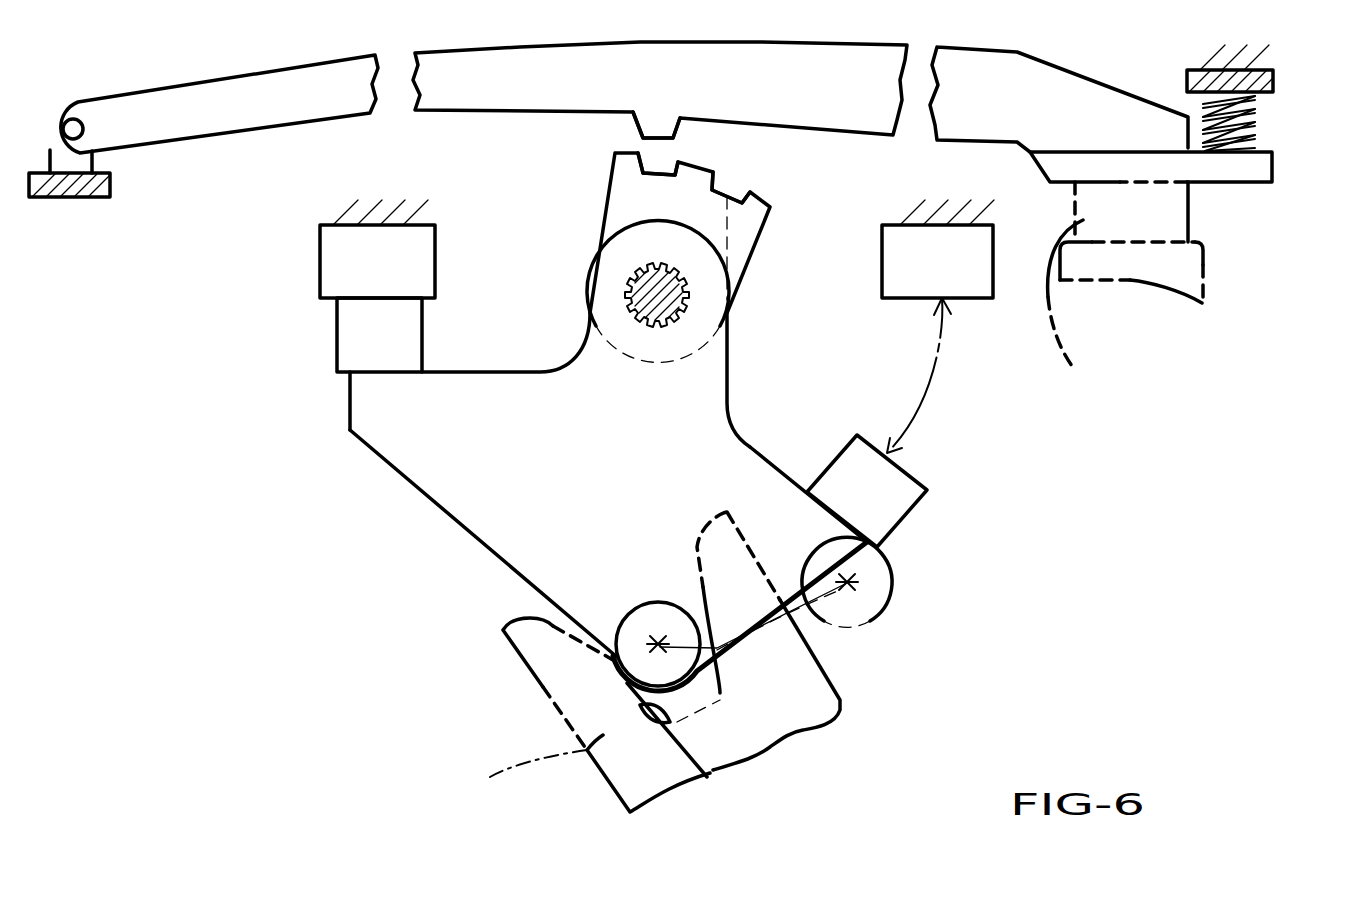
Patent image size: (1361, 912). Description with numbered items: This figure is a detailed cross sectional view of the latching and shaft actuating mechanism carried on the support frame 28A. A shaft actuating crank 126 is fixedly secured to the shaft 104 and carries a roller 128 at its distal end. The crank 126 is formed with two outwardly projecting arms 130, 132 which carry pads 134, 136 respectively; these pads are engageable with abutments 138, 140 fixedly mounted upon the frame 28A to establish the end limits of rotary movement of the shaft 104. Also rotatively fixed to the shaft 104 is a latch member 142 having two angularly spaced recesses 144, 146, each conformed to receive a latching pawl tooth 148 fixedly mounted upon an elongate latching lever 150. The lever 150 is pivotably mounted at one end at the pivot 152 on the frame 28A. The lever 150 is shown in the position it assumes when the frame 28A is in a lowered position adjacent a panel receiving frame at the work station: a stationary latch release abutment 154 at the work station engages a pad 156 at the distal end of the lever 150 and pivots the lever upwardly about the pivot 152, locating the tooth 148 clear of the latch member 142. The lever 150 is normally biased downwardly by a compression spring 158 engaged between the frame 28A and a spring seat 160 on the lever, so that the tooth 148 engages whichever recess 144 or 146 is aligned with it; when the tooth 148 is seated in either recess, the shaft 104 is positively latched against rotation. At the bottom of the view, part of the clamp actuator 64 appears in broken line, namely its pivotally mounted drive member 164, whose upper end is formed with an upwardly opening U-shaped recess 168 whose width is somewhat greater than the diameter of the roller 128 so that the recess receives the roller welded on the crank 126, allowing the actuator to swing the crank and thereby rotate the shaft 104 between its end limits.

The pivot 152 is at (72, 118).
The frame 28A is at (80, 198).
The latching lever 150 is at (633, 88).
The latching pawl tooth 148 is at (657, 127).
The latch member 142 is at (613, 197).
The recess 144 is at (678, 167).
The recess 146 is at (740, 190).
The shaft 104 is at (663, 327).
The abutment 138 is at (397, 283).
The pad 134 is at (405, 353).
The abutment 140 is at (950, 277).
The pad 136 is at (890, 503).
The arm 130 is at (502, 383).
The shaft actuating crank 126 is at (510, 545).
The arm 132 is at (750, 463).
The roller 128 is at (627, 683).
The clamp actuator 64 is at (630, 790).
The drive member 164 is at (516, 783).
The U-shaped recess 168 is at (710, 773).
The compression spring 158 is at (1258, 130).
The spring seat 160 is at (1247, 183).
The latch release abutment 154 is at (1193, 268).
The pad 156 is at (1085, 308).